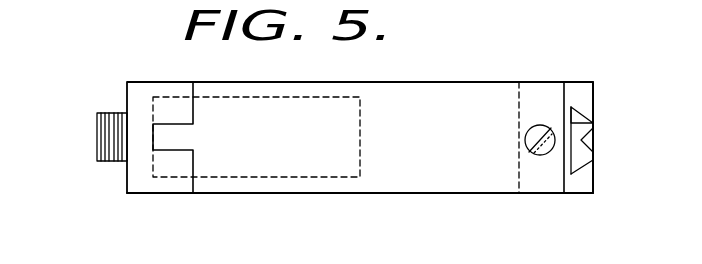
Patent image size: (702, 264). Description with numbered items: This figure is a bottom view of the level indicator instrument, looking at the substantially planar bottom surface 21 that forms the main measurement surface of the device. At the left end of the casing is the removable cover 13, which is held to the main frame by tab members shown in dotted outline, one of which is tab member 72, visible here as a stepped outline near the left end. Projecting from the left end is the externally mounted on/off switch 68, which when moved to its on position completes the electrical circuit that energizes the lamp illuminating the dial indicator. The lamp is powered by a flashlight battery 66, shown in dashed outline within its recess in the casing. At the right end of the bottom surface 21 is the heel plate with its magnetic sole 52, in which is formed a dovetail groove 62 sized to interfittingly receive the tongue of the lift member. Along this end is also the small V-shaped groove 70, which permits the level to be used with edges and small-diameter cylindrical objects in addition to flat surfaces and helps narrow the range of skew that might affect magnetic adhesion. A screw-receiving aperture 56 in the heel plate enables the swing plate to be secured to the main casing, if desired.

The removable cover 13 is at (140, 93).
The bottom surface 21 is at (412, 178).
The on/off switch 68 is at (103, 143).
The tab member 72 is at (174, 133).
The flashlight battery 66 is at (364, 118).
The screw-receiving aperture 56 is at (540, 157).
The magnetic sole 52 is at (583, 92).
The dovetail groove 62 is at (593, 125).
The V-shaped groove 70 is at (585, 143).